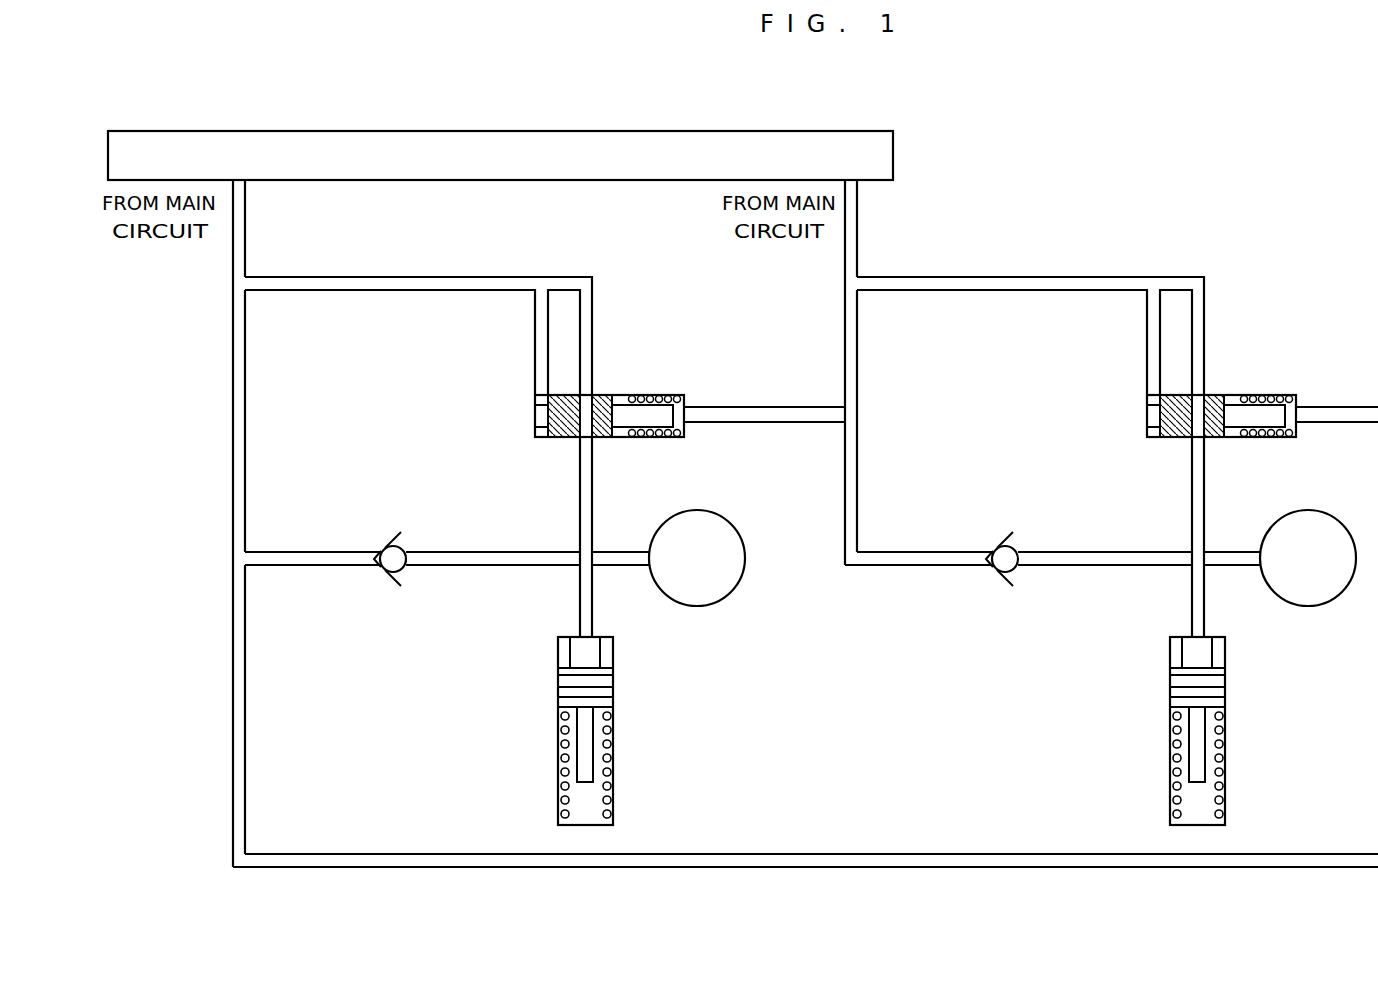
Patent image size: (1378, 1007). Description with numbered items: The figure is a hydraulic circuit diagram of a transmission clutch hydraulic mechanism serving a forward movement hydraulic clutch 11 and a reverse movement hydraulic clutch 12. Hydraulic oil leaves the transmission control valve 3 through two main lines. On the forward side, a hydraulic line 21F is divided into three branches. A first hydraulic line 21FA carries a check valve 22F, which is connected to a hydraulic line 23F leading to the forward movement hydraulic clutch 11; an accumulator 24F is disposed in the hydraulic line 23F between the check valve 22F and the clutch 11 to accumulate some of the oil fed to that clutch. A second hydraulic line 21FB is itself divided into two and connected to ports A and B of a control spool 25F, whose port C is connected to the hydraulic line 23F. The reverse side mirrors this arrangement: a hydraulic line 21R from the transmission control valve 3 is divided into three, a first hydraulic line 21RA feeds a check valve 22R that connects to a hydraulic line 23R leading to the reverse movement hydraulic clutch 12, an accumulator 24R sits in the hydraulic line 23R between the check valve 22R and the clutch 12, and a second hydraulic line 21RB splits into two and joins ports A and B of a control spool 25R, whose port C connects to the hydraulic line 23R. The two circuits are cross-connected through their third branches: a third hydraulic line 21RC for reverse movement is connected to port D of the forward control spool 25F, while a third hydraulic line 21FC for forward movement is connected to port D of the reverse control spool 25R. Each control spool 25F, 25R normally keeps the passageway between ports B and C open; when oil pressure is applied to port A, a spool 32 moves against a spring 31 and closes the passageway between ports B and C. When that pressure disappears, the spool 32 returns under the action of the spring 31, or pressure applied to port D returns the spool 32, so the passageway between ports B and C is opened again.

The transmission control valve 3 is at (882, 157).
The forward movement hydraulic clutch 11 is at (745, 565).
The reverse movement hydraulic clutch 12 is at (1305, 607).
The hydraulic line 21F is at (233, 332).
The first hydraulic line 21FA is at (283, 552).
The second hydraulic line 21FB is at (403, 277).
The third hydraulic line 21FC is at (333, 854).
The check valve 22F is at (396, 540).
The hydraulic line 23F is at (482, 568).
The accumulator 24F is at (558, 705).
The control spool 25F is at (608, 382).
The hydraulic line 21R is at (845, 332).
The first hydraulic line 21RA is at (893, 567).
The second hydraulic line 21RB is at (1003, 277).
The third hydraulic line 21RC is at (770, 424).
The check valve 22R is at (1008, 540).
The hydraulic line 23R is at (1093, 568).
The accumulator 24R is at (1170, 705).
The control spool 25R is at (1220, 382).
The spring 31 is at (665, 437).
The spool 32 is at (600, 437).